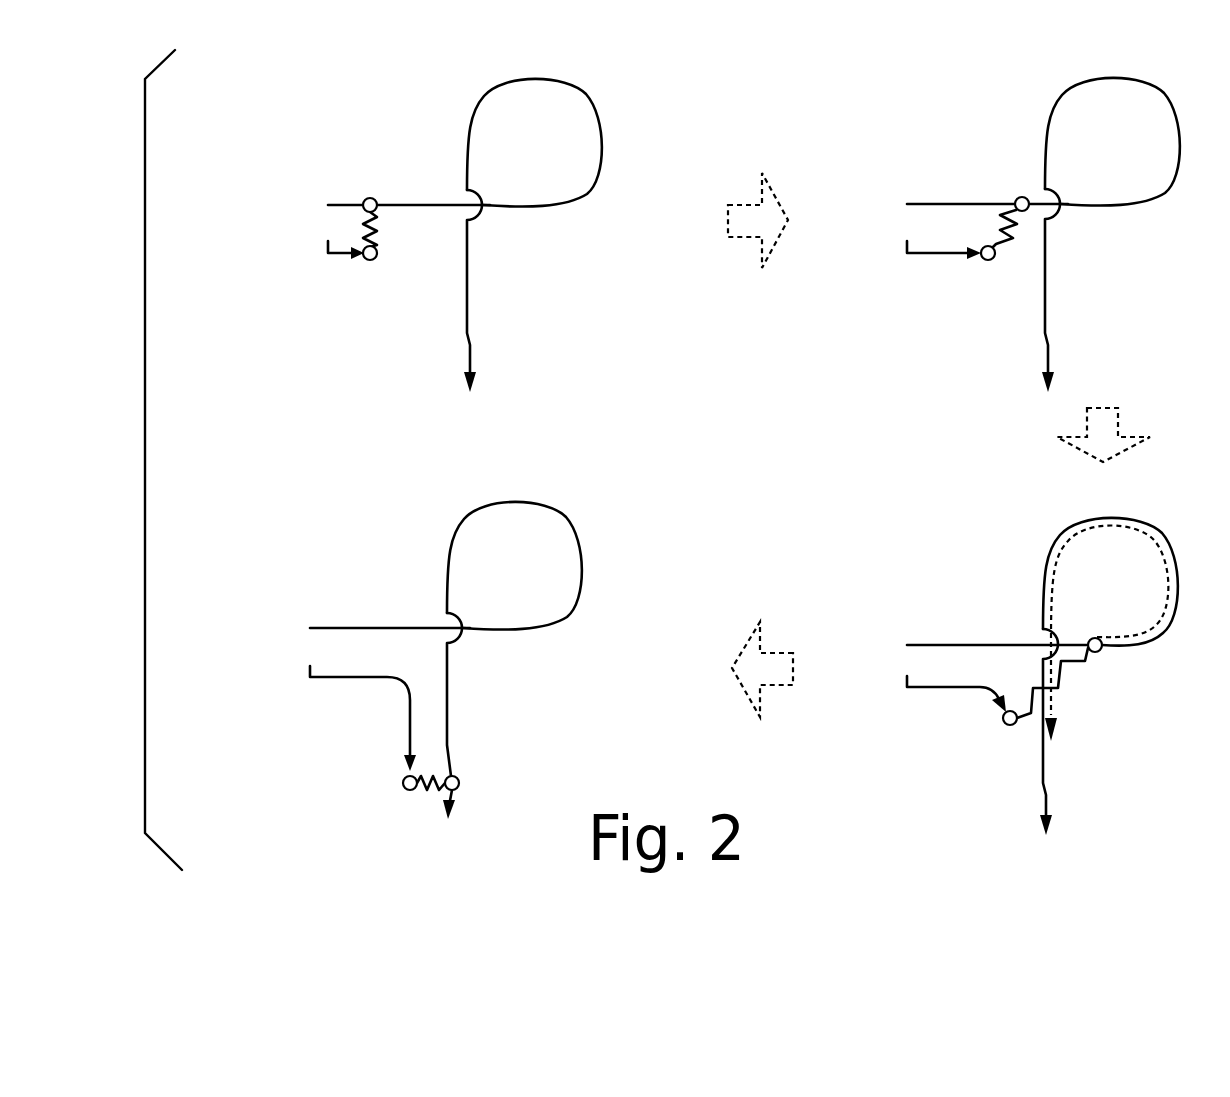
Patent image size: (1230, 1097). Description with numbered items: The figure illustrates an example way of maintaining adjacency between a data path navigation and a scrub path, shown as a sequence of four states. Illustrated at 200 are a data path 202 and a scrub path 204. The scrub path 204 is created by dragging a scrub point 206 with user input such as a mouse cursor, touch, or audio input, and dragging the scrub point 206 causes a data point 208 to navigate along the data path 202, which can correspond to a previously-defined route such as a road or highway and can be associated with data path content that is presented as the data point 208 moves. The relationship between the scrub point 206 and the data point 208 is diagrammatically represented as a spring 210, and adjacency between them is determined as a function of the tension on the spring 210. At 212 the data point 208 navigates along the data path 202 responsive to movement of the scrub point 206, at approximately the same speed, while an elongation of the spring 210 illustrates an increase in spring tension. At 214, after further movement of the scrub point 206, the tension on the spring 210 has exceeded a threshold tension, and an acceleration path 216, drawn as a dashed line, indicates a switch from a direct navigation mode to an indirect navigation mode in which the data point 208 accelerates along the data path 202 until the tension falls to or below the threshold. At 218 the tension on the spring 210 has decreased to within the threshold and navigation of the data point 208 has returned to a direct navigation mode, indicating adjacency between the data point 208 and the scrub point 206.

The initial state illustration 200 is at (282, 85).
The data path 202 is at (320, 190).
The scrub path 204 is at (320, 240).
The scrub point 206 is at (366, 260).
The data point 208 is at (376, 197).
The spring 210 is at (378, 232).
The navigation illustration 212 is at (948, 69).
The further navigation illustration 214 is at (958, 542).
The acceleration path 216 is at (1053, 701).
The return-to-direct-mode illustration 218 is at (282, 525).